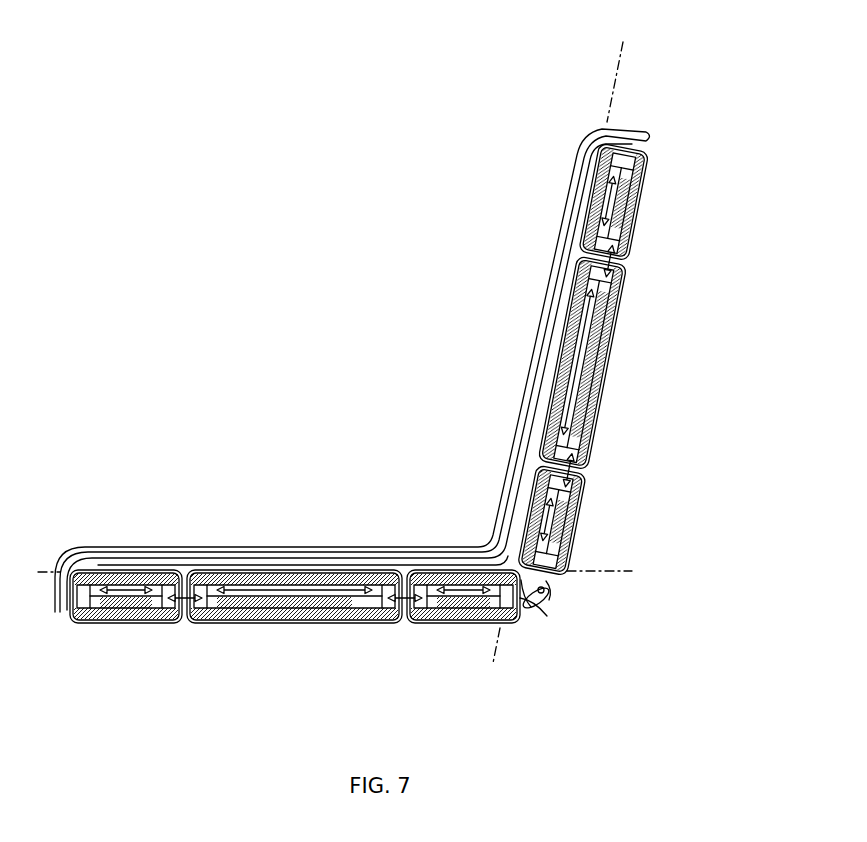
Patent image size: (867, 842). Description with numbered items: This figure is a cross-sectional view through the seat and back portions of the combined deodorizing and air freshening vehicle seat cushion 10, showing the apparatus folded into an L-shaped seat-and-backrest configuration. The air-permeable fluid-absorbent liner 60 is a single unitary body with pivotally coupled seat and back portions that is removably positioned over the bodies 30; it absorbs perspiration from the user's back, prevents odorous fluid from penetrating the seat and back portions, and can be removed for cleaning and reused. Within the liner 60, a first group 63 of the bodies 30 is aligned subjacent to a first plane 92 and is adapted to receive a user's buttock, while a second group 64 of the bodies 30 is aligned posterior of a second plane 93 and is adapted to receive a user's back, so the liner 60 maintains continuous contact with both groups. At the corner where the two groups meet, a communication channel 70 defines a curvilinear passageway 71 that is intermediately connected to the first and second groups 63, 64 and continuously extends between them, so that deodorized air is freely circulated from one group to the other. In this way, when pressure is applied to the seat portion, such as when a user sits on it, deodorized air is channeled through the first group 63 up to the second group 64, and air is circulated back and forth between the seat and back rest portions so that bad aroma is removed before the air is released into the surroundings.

The combined deodorizing and air freshening vehicle seat cushion 10 is at (256, 209).
The auxiliary bodies 30 is at (674, 340).
The air-permeable fluid-absorbent liner 60 is at (612, 128).
The first group of primary bodies 63 is at (470, 640).
The second group of primary bodies 64 is at (603, 498).
The communication channel 70 is at (549, 600).
The curvilinear passageway 71 is at (540, 618).
The first plane 92 is at (612, 570).
The second plane 93 is at (610, 93).